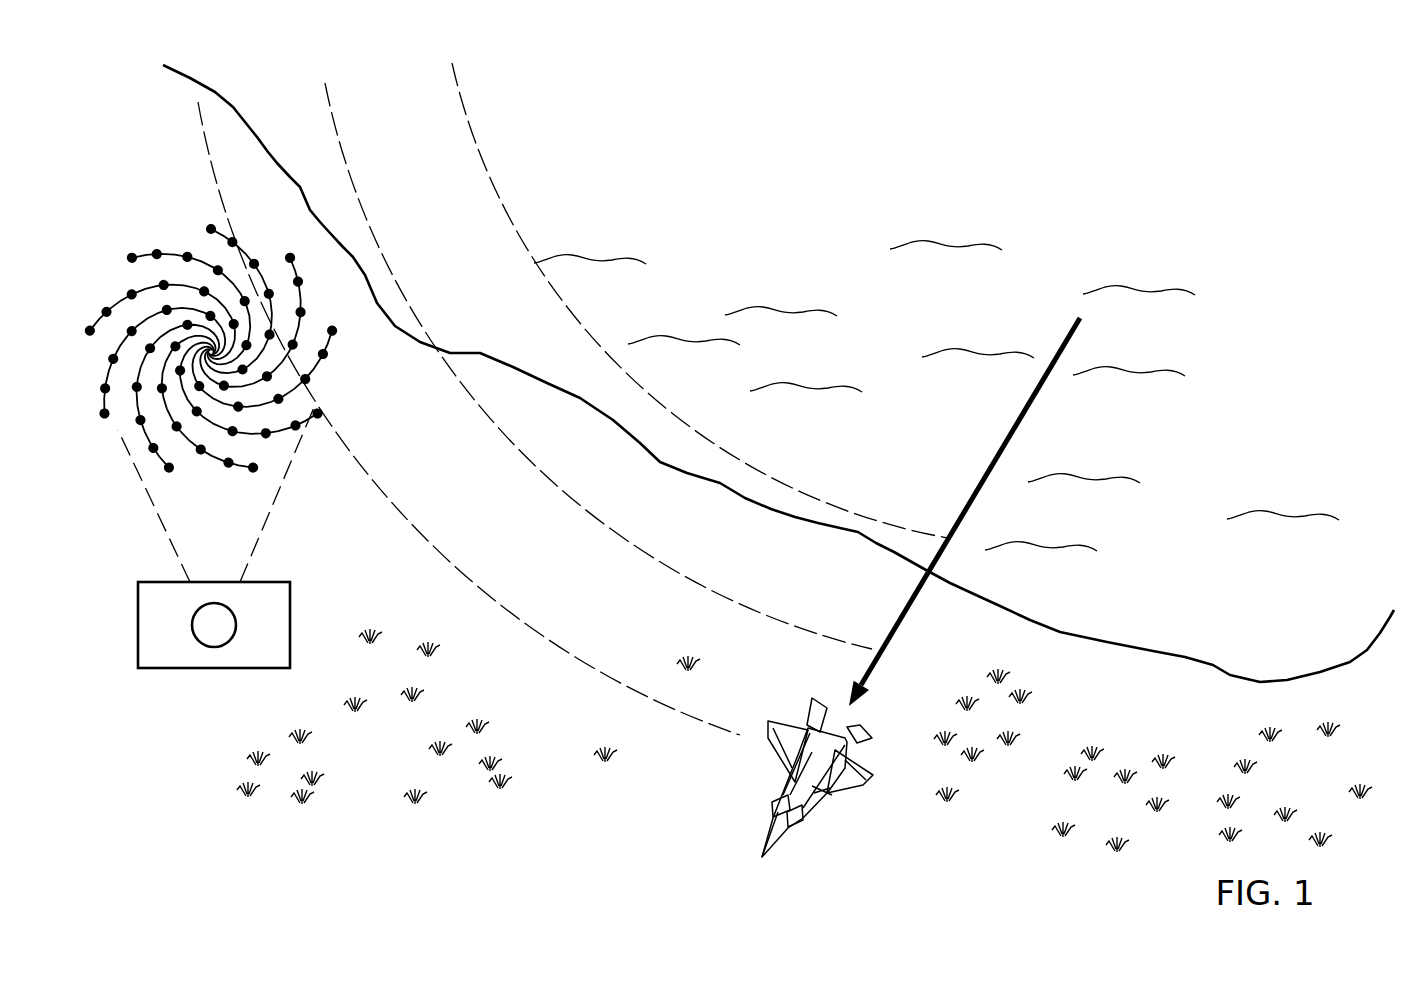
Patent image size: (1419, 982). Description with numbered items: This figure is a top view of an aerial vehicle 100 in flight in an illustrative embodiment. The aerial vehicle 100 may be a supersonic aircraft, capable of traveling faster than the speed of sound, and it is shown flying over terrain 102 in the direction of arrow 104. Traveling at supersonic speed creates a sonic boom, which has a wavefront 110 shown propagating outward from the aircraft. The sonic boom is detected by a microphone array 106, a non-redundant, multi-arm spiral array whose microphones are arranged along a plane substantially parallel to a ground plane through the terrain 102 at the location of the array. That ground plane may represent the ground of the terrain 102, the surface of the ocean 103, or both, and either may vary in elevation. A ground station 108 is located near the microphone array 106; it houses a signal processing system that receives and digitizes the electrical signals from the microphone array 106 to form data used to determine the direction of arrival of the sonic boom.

The aerial vehicle 100 is at (761, 853).
The terrain 102 is at (388, 612).
The ocean 103 is at (1052, 525).
The arrow 104 is at (896, 624).
The microphone array 106 is at (174, 231).
The ground station 108 is at (214, 668).
The wavefront 110 is at (478, 145).